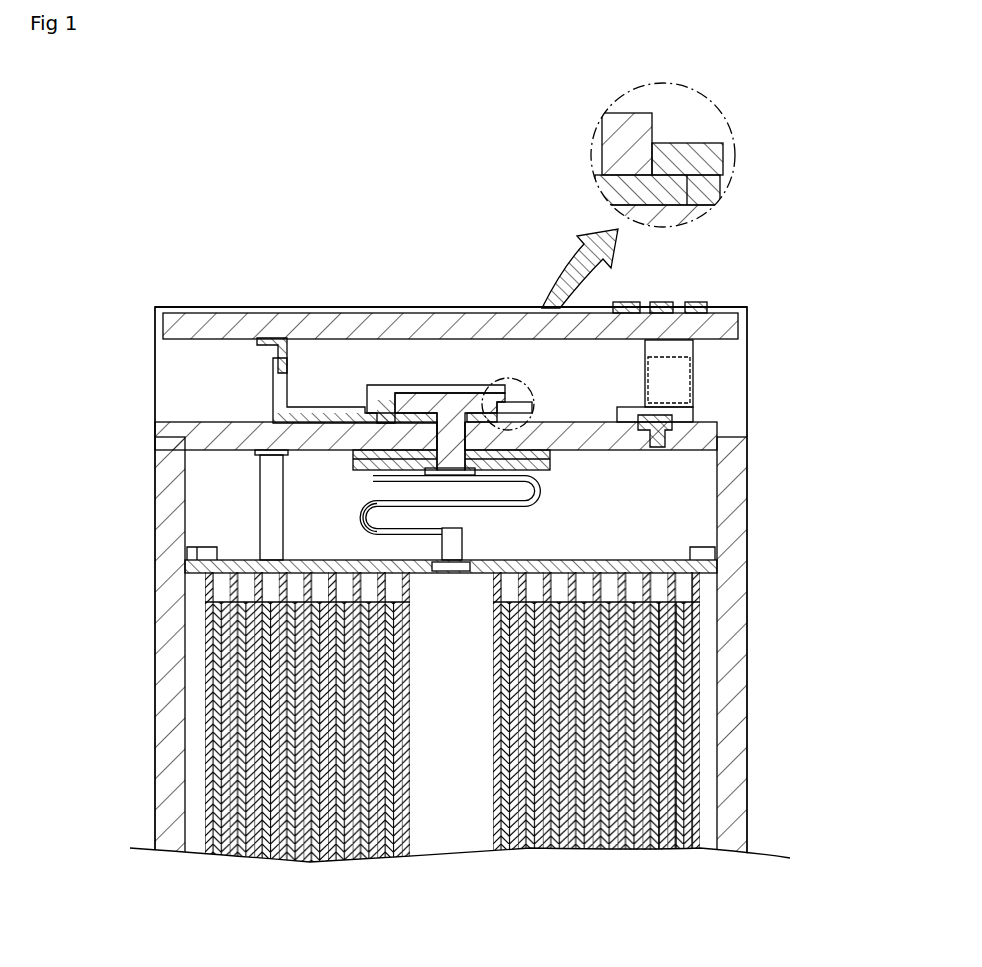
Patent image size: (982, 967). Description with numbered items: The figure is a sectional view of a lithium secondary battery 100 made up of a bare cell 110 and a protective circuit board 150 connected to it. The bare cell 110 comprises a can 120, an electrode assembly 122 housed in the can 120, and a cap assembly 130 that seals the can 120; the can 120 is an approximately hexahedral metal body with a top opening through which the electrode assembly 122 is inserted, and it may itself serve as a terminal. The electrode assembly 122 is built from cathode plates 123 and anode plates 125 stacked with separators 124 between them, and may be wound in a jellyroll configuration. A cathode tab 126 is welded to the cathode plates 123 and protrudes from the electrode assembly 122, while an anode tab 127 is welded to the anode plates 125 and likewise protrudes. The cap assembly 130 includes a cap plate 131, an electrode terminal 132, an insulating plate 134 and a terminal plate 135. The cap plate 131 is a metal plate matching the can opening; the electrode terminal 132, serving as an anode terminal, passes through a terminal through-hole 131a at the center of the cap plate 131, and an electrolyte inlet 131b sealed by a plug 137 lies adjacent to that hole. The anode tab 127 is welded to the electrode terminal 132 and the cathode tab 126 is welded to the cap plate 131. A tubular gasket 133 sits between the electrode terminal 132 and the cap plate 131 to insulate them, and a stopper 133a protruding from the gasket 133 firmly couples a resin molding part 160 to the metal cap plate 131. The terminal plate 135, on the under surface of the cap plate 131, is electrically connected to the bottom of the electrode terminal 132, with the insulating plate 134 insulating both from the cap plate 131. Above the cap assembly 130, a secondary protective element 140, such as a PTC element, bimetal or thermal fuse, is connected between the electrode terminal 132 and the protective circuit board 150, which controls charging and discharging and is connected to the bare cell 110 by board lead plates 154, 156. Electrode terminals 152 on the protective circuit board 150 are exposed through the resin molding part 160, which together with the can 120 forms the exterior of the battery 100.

The lithium secondary battery 100 is at (146, 268).
The bare cell 110 is at (766, 442).
The can 120 is at (737, 735).
The electrode assembly 122 is at (712, 650).
The cathode plates 123 is at (678, 847).
The separators 124 is at (694, 847).
The anode plates 125 is at (655, 847).
The cathode tab 126 is at (265, 482).
The anode tab 127 is at (373, 516).
The cap assembly 130 is at (565, 425).
The cap plate 131 is at (162, 425).
The terminal through-hole 131a is at (483, 406).
The electrolyte inlet 131b is at (665, 420).
The electrode terminal 132 is at (410, 398).
The gasket 133 is at (492, 406).
The stopper 133a is at (707, 163).
The insulating plate 134 is at (352, 407).
The terminal plate 135 is at (530, 477).
The plug 137 is at (658, 418).
The secondary protective element 140 is at (300, 407).
The protective circuit board 150 is at (203, 318).
The electrode terminals 152 is at (697, 301).
The board lead plate 154 is at (683, 343).
The board lead plate 156 is at (268, 338).
The resin molding part 160 is at (156, 353).